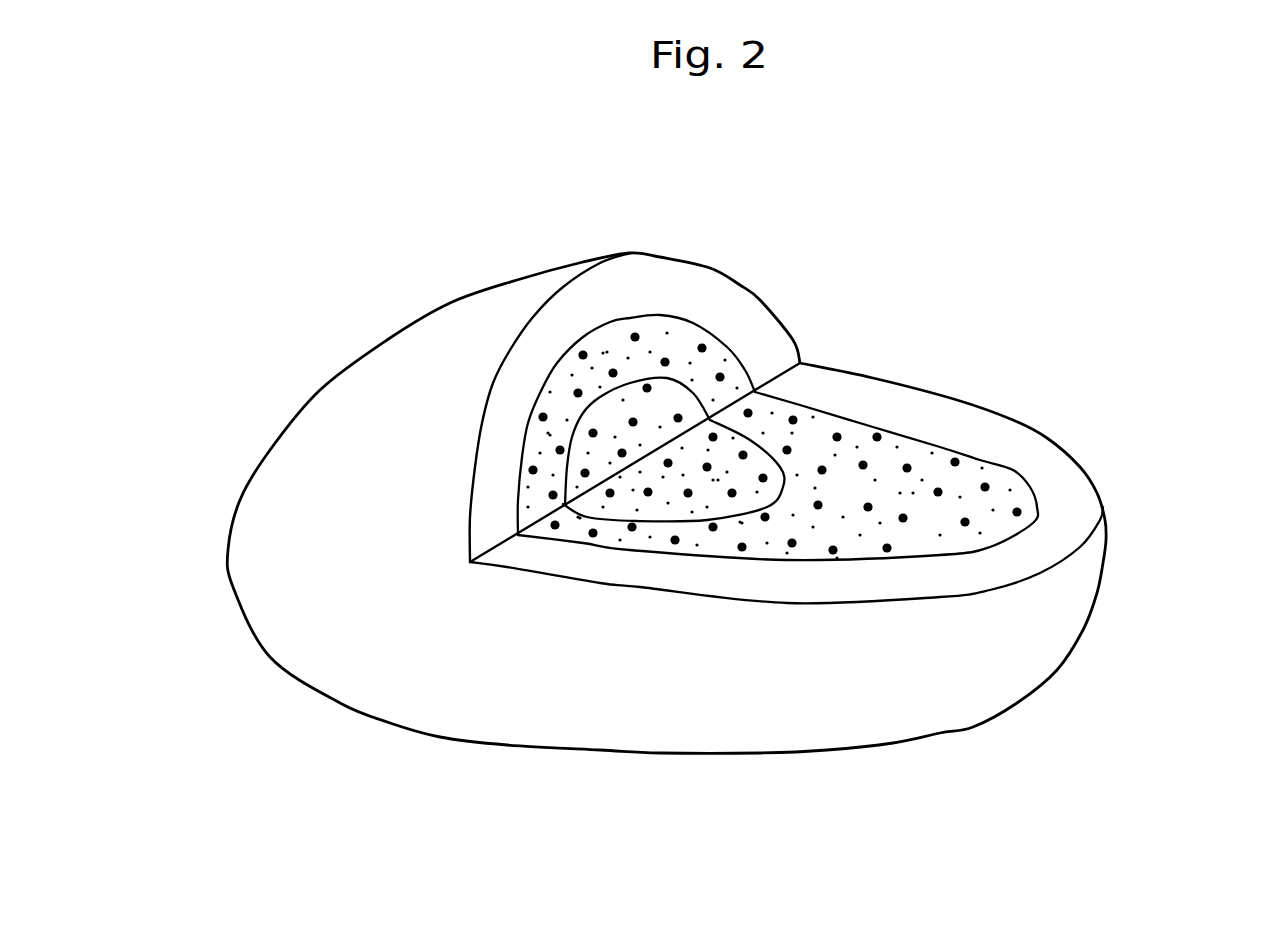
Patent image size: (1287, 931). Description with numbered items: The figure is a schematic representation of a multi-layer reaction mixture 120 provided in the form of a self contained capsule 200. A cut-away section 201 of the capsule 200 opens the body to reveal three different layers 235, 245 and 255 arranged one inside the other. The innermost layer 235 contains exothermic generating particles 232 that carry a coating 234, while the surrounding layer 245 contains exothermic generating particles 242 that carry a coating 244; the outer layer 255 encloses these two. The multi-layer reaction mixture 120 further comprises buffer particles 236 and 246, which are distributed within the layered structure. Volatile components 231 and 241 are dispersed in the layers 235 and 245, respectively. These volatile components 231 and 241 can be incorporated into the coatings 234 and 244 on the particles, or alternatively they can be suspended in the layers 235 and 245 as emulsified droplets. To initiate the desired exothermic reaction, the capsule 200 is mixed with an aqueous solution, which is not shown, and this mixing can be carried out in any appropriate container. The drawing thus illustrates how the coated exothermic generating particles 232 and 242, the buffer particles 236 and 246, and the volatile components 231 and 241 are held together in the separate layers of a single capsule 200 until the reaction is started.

The self contained capsule 200 is at (412, 287).
The cut-away section 201 is at (823, 337).
The multi-layer reaction mixture 120 is at (310, 620).
The volatile component 231 is at (617, 343).
The buffer particles 236 is at (667, 400).
The exothermic generating particles 232 is at (763, 478).
The coating 234 is at (745, 455).
The layer 235 is at (655, 508).
The volatile component 241 is at (860, 533).
The exothermic generating particles 242 is at (985, 487).
The coating 244 is at (1017, 512).
The layer 245 is at (570, 530).
The buffer particles 246 is at (947, 533).
The layer 255 is at (530, 553).